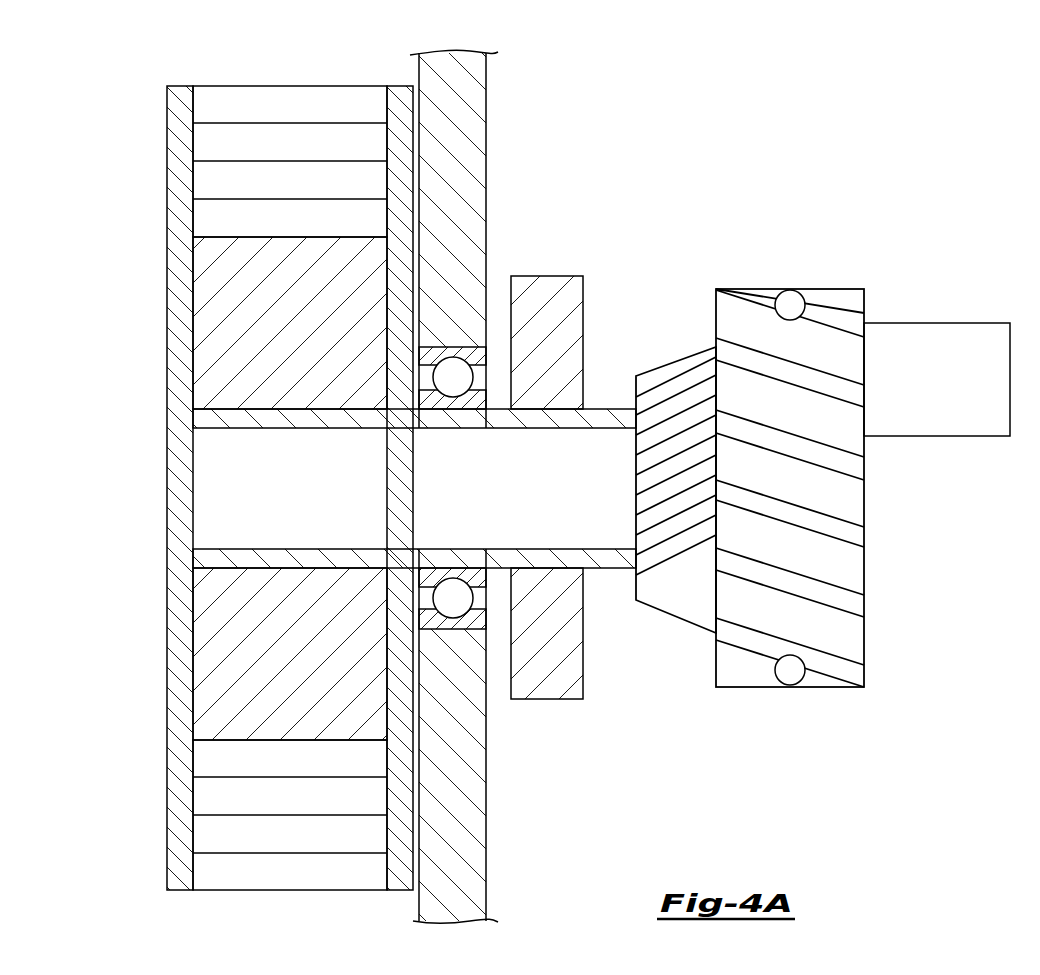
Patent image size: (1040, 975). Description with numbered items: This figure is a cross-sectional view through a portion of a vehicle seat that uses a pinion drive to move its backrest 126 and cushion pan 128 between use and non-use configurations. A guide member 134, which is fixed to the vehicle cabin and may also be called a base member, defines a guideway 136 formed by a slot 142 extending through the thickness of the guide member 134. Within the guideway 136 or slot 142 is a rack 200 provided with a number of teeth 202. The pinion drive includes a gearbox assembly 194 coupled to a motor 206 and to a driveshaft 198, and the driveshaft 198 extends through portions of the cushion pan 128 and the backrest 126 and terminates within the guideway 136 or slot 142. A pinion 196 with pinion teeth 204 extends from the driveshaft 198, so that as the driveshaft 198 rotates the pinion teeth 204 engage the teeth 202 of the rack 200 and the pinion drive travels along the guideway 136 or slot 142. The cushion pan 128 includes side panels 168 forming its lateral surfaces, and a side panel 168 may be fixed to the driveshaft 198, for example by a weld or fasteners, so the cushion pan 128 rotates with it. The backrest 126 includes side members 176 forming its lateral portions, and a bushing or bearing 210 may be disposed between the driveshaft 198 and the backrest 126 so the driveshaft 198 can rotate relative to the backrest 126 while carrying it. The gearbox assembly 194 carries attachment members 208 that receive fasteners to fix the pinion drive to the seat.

The backrest 126 is at (514, 486).
The side members 176 is at (487, 123).
The cushion pan 128 is at (586, 487).
The side panels 168 is at (547, 276).
The guide member 134 is at (177, 248).
The guideway 136 is at (289, 122).
The slot 142 is at (387, 72).
The gearbox assembly 194 is at (845, 500).
The pinion 196 is at (217, 488).
The pinion teeth 204 is at (228, 326).
The driveshaft 198 is at (360, 500).
The rack 200 is at (209, 506).
The teeth 202 is at (222, 180).
The motor 206 is at (946, 394).
The attachment members 208 is at (790, 305).
The bearing 210 is at (453, 380).